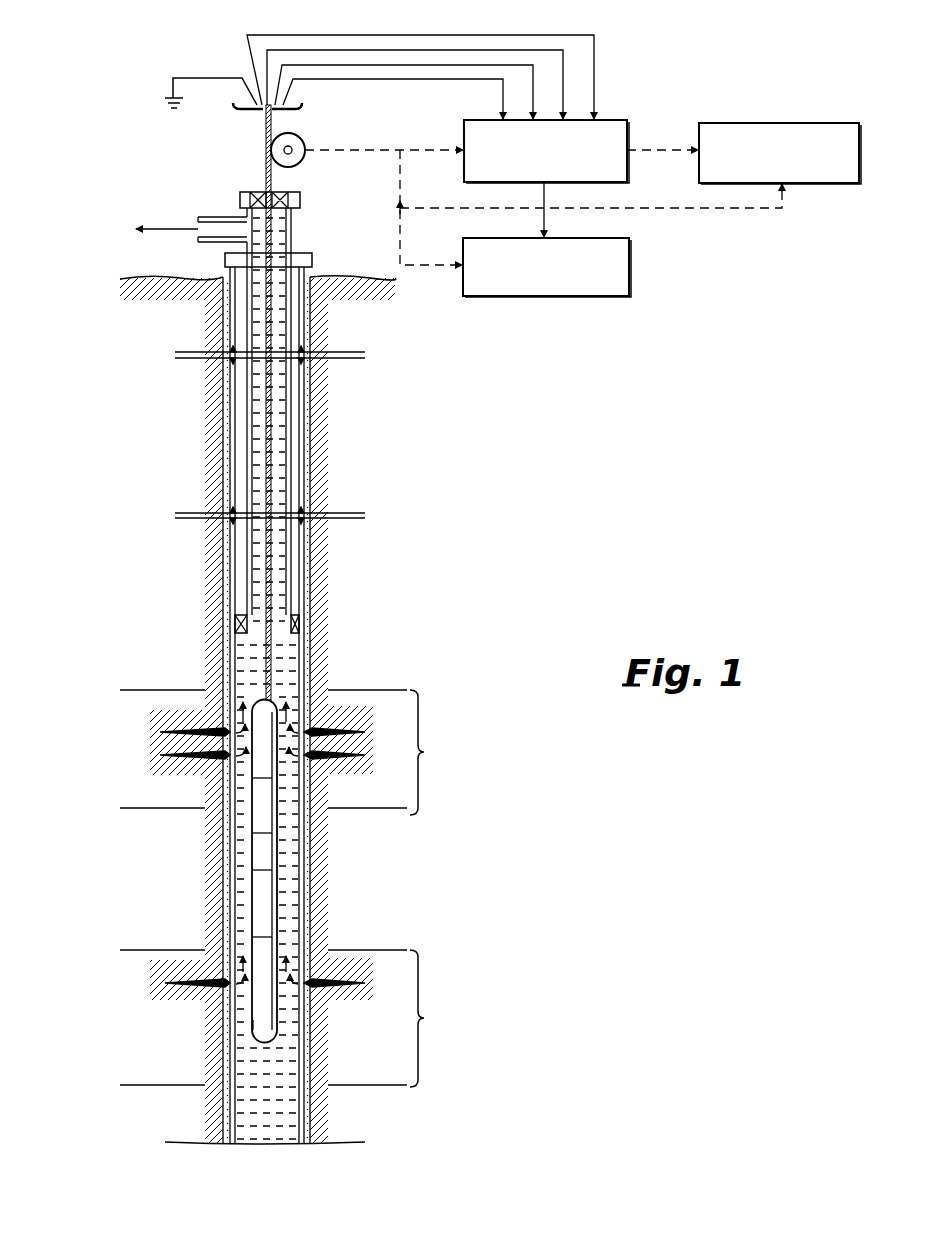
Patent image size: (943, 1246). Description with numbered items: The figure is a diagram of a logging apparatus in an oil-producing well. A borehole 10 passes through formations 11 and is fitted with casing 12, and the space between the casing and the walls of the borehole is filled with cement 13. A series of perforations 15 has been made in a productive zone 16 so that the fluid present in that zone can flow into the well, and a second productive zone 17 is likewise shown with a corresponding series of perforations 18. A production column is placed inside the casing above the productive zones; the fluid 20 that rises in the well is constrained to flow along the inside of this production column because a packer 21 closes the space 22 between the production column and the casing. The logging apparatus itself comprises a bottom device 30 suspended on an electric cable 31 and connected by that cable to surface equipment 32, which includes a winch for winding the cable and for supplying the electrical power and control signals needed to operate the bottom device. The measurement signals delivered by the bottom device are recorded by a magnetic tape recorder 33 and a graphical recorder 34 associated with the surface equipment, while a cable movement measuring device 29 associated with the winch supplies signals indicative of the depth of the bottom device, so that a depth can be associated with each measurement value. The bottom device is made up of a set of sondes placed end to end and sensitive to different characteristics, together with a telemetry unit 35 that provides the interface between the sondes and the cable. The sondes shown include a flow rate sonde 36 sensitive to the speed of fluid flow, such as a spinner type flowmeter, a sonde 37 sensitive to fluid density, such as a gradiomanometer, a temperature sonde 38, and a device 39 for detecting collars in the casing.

The borehole 10 is at (310, 397).
The formations 11 is at (312, 342).
The casing 12 is at (294, 445).
The cement 13 is at (307, 655).
The perforations 15 is at (172, 757).
The productive zone 16 is at (424, 752).
The second productive zone 17 is at (424, 1018).
The perforations 18 is at (178, 985).
The fluid in tubing 20 is at (289, 543).
The packer 21 is at (300, 625).
The space 22 is at (296, 580).
The cable movement measuring device 29 is at (305, 140).
The bottom device 30 is at (253, 888).
The electric cable 31 is at (265, 112).
The surface equipment 32 is at (627, 120).
The magnetic tape recorder 33 is at (800, 123).
The graphical recorder 34 is at (631, 291).
The telemetry unit 35 is at (262, 758).
The flow rate sonde 36 is at (254, 1030).
The fluid density sonde 37 is at (268, 917).
The temperature sonde 38 is at (274, 857).
The collar detecting device 39 is at (257, 818).